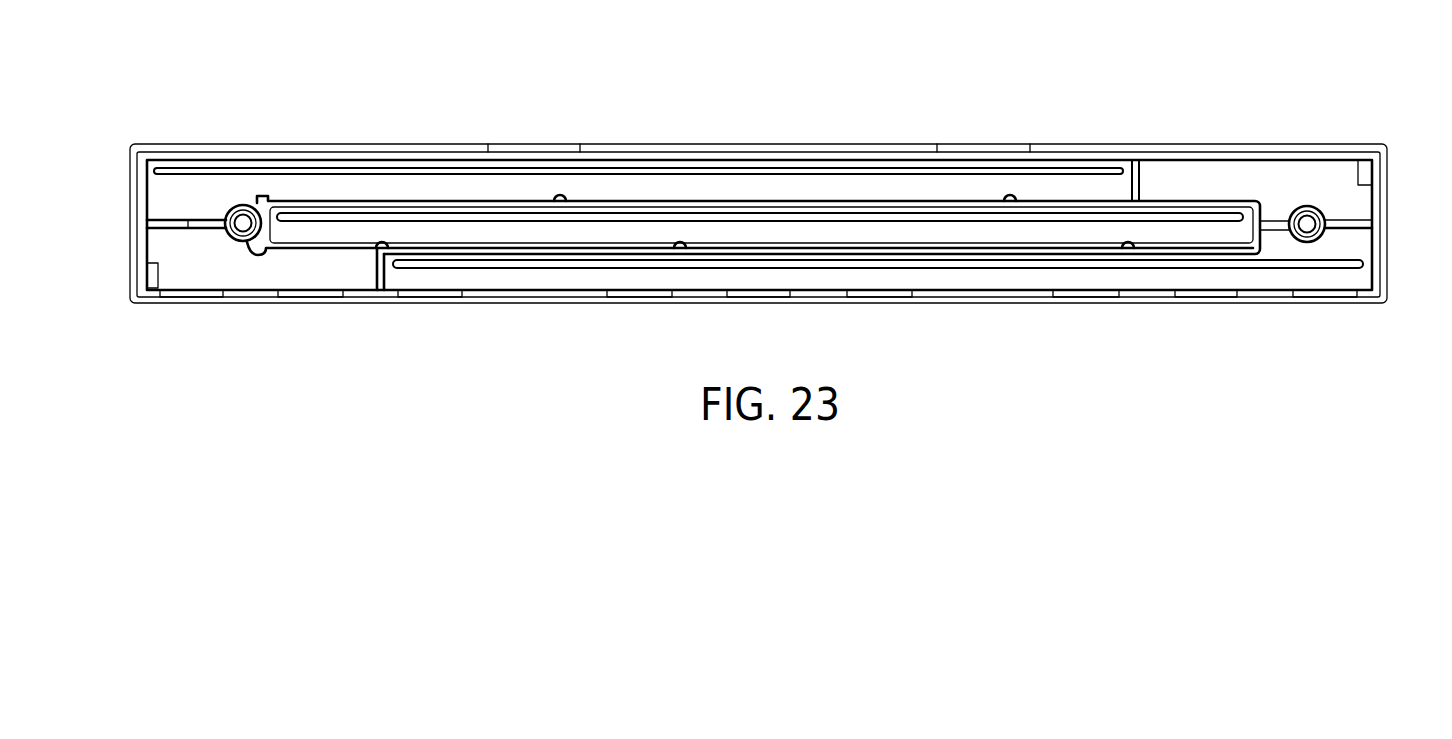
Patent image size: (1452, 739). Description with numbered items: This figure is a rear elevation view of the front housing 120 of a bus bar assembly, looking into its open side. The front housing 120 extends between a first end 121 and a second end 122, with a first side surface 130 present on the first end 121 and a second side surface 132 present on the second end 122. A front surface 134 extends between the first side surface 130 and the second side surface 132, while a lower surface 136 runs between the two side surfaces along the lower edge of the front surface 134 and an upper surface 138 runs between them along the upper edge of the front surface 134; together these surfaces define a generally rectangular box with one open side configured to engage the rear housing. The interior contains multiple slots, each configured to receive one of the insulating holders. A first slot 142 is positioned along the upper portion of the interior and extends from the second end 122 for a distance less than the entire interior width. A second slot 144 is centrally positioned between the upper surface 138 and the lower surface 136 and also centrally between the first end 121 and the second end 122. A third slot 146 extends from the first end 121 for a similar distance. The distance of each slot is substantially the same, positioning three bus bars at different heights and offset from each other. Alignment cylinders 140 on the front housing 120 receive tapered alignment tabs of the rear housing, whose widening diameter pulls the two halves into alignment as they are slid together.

The front housing 120 is at (1268, 125).
The first end 121 is at (1402, 270).
The second end 122 is at (124, 243).
The first side surface 130 is at (1390, 187).
The second side surface 132 is at (128, 221).
The front surface 134 is at (200, 264).
The lower surface 136 is at (363, 303).
The upper surface 138 is at (383, 145).
The alignment cylinder 140 is at (243, 226).
The first slot 142 is at (1123, 191).
The second slot 144 is at (1247, 237).
The third slot 146 is at (390, 273).